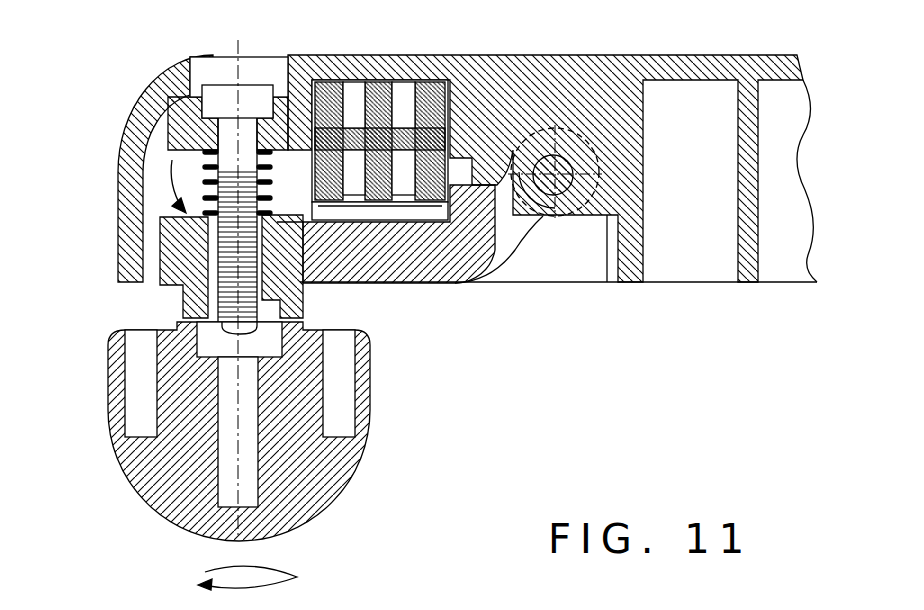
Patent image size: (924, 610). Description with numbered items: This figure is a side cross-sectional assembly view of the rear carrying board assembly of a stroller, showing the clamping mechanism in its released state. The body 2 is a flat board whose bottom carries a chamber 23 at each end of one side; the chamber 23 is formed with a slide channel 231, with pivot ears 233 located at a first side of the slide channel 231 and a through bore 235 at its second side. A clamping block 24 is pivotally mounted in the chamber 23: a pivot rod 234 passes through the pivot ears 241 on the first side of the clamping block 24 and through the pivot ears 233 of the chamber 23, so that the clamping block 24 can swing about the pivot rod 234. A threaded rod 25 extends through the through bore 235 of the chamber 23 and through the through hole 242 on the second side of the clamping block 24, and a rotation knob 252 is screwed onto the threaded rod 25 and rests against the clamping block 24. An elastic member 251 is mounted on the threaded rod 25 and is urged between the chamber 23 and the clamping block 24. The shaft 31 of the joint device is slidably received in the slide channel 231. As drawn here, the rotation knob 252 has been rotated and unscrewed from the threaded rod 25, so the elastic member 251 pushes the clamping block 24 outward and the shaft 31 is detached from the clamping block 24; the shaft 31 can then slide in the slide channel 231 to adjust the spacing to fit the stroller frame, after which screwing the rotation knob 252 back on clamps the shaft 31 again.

The body 2 is at (724, 46).
The chamber 23 is at (155, 207).
The slide channel 231 is at (313, 118).
The pivot ears 233 is at (534, 112).
The pivot rod 234 is at (557, 165).
The through bore 235 is at (262, 66).
The clamping block 24 is at (458, 270).
The pivot ears 241 is at (557, 220).
The through hole 242 is at (180, 253).
The threaded rod 25 is at (227, 100).
The elastic member 251 is at (205, 176).
The rotation knob 252 is at (323, 488).
The shaft 31 is at (378, 92).